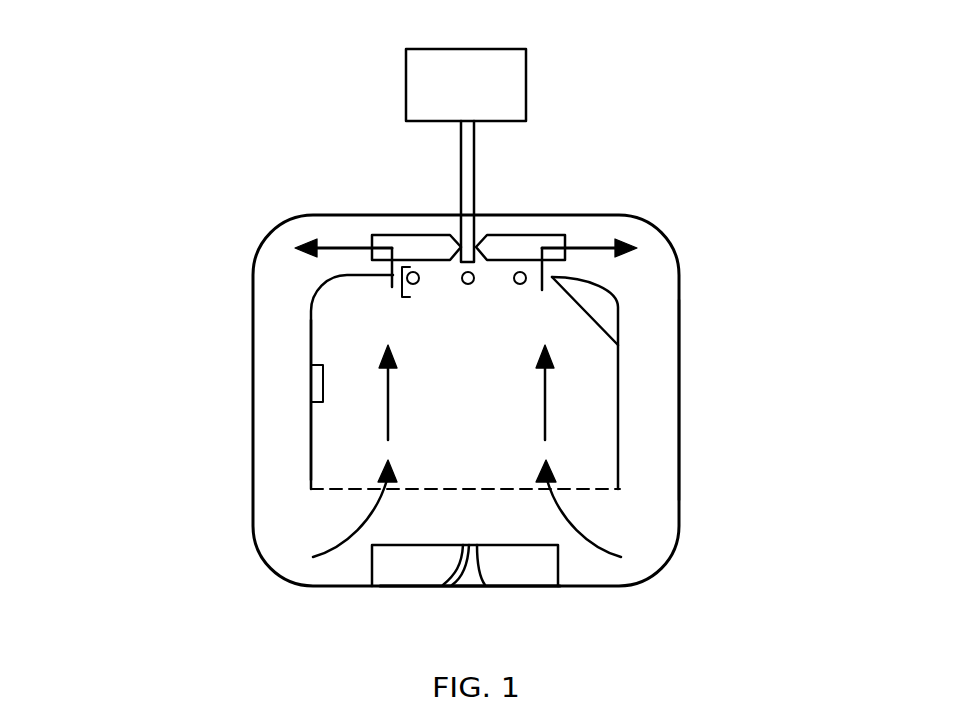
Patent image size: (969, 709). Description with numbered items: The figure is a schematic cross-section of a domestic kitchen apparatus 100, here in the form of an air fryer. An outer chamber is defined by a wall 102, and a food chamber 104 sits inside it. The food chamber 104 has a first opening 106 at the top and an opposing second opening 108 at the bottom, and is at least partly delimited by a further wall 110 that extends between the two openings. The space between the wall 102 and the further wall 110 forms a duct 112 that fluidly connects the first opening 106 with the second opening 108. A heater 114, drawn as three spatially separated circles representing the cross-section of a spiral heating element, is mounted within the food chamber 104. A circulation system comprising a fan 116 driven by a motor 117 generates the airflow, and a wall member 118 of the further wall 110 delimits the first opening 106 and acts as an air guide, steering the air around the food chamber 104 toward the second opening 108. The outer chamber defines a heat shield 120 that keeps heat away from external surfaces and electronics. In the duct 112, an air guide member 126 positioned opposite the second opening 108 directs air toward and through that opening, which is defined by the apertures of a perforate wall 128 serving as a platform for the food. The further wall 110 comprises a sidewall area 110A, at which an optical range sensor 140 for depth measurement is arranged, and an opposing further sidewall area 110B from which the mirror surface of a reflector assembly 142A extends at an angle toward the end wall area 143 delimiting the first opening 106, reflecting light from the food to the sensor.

The domestic kitchen apparatus 100 is at (143, 128).
The wall 102 is at (680, 428).
The food chamber 104 is at (345, 440).
The first opening 106 is at (493, 272).
The second opening 108 is at (343, 490).
The further wall 110 is at (311, 462).
The sidewall area 110A is at (308, 343).
The further sidewall area 110B is at (680, 378).
The duct 112 is at (645, 507).
The heater 114 is at (395, 275).
The fan 116 is at (417, 250).
The motor 117 is at (505, 87).
The wall member 118 is at (393, 278).
The heat shield 120 is at (280, 245).
The air guide member 126 is at (397, 573).
The perforate wall 128 is at (590, 492).
The optical range sensor 140 is at (318, 383).
The reflector assembly 142A is at (585, 315).
The end wall area 143 is at (560, 270).